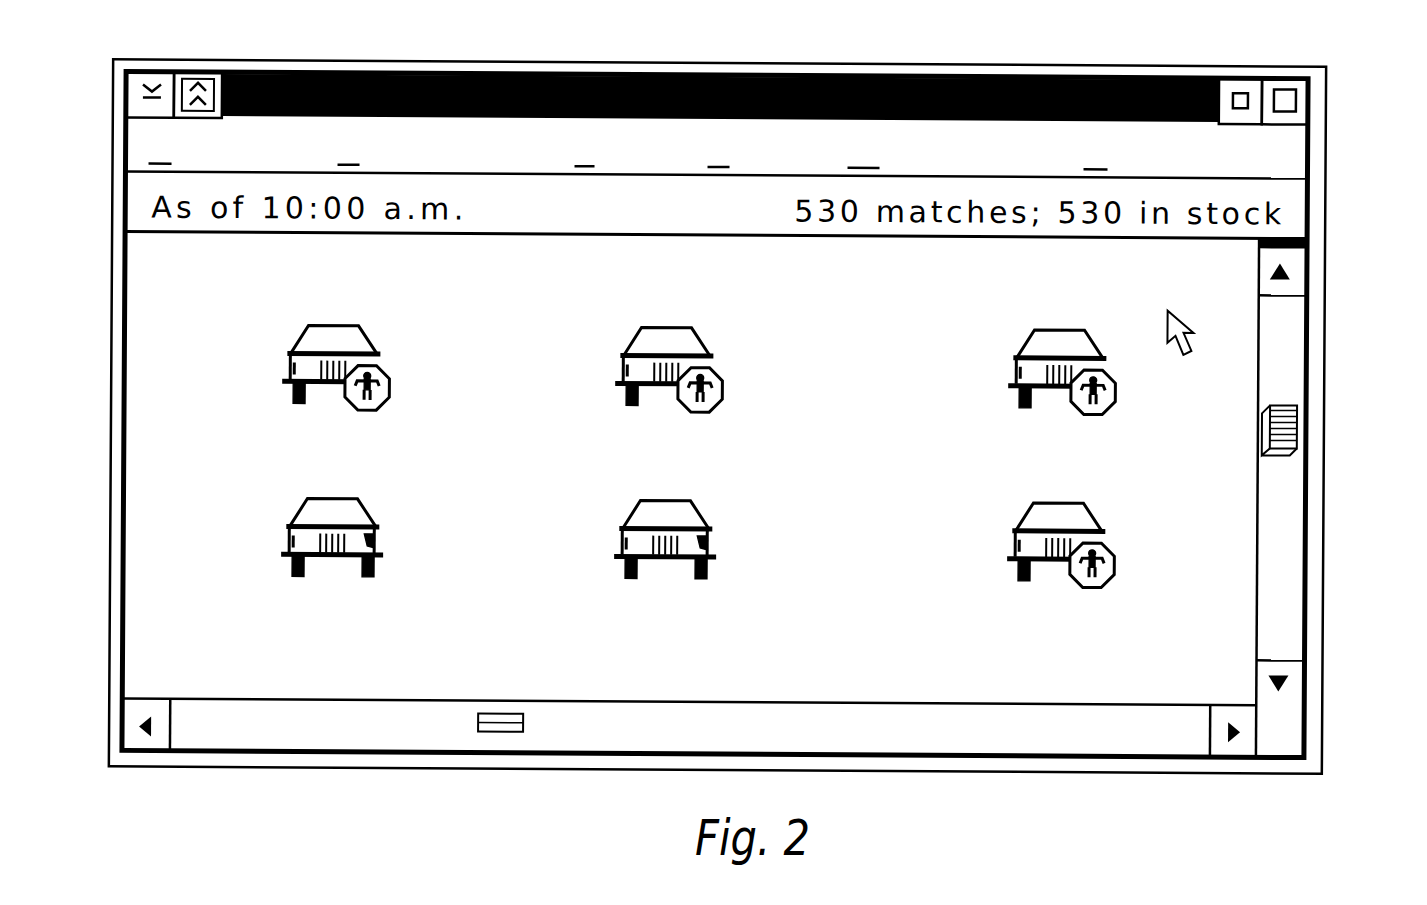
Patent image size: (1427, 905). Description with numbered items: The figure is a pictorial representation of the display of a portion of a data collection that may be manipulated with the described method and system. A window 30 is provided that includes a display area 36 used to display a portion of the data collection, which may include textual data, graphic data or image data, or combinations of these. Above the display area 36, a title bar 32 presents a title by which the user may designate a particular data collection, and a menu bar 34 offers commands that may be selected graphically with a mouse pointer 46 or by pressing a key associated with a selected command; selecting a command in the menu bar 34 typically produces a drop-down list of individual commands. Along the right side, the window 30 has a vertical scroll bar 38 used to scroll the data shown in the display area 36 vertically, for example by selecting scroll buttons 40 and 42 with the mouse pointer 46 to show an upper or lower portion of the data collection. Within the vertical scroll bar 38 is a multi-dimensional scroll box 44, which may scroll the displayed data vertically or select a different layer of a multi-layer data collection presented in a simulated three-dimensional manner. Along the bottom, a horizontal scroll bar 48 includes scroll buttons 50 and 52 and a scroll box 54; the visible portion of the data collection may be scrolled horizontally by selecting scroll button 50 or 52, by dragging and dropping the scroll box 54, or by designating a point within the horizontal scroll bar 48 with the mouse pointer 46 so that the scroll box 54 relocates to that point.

The window 30 is at (1047, 63).
The title bar 32 is at (338, 70).
The menu bar 34 is at (135, 147).
The display area 36 is at (929, 301).
The vertical scroll bar 38 is at (1307, 496).
The scroll button 40 is at (1292, 266).
The scroll button 42 is at (1288, 697).
The multi-dimensional scroll box 44 is at (1255, 412).
The mouse pointer 46 is at (1186, 322).
The horizontal scroll bar 48 is at (689, 728).
The scroll button 50 is at (153, 754).
The scroll button 52 is at (1237, 754).
The scroll box 54 is at (506, 761).